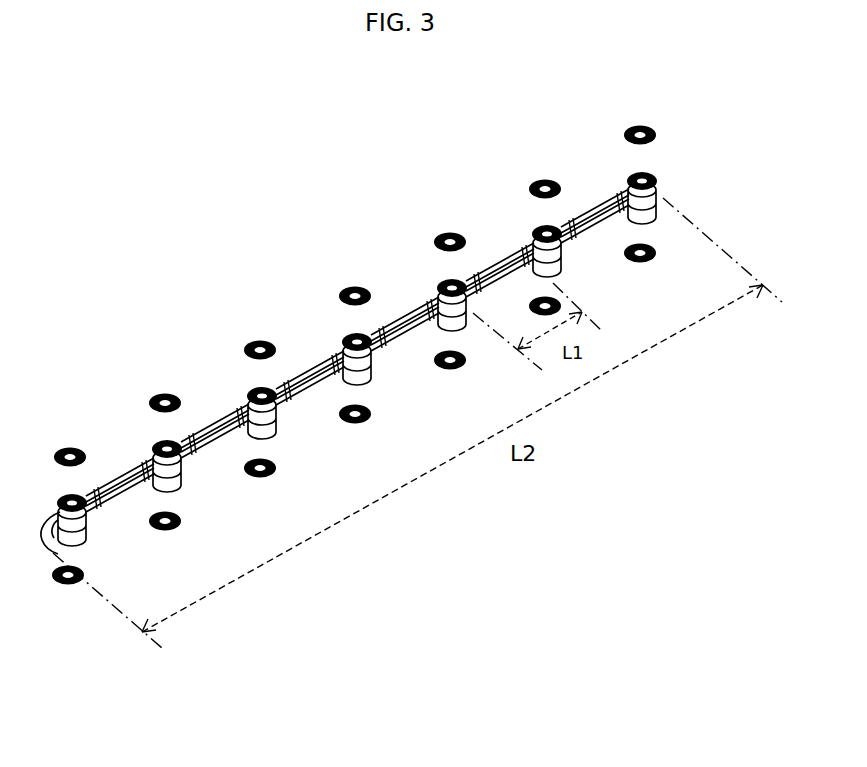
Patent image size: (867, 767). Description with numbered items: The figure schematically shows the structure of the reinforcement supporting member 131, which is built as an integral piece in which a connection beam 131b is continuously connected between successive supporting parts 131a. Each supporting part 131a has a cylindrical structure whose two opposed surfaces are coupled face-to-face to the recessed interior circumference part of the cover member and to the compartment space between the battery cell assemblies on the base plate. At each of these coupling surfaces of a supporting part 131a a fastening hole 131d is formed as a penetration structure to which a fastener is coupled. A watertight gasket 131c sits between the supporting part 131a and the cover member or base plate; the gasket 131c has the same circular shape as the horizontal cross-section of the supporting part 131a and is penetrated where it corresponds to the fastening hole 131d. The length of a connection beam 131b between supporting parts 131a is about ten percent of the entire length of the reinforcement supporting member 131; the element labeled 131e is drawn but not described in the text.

The reinforcement supporting member 131 is at (198, 176).
The supporting part 131a is at (247, 392).
The connection beam 131b is at (320, 362).
The watertight gasket 131c is at (349, 289).
The fastening hole 131d is at (539, 230).
The ring / grommet 131e is at (445, 238).